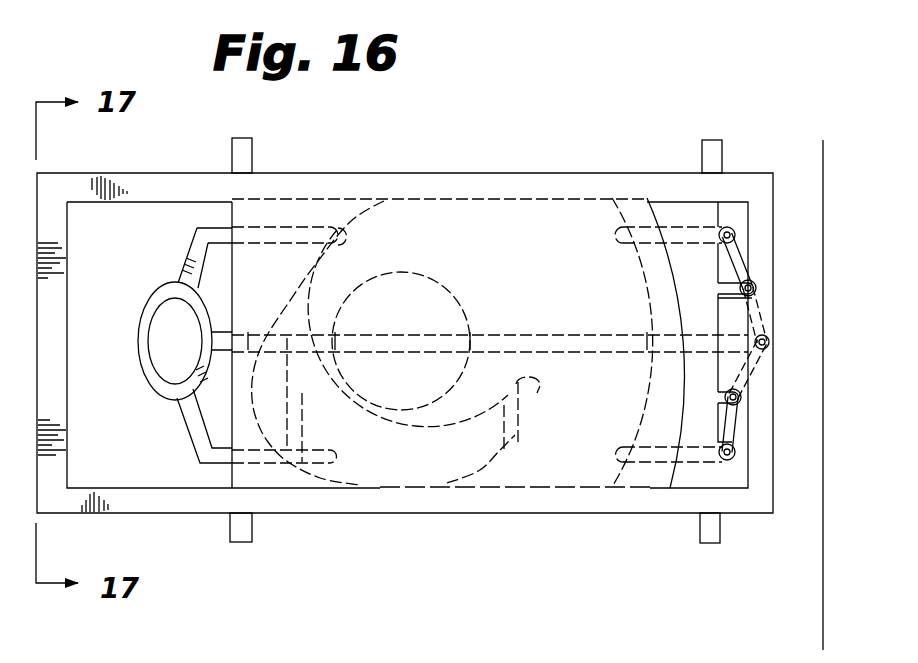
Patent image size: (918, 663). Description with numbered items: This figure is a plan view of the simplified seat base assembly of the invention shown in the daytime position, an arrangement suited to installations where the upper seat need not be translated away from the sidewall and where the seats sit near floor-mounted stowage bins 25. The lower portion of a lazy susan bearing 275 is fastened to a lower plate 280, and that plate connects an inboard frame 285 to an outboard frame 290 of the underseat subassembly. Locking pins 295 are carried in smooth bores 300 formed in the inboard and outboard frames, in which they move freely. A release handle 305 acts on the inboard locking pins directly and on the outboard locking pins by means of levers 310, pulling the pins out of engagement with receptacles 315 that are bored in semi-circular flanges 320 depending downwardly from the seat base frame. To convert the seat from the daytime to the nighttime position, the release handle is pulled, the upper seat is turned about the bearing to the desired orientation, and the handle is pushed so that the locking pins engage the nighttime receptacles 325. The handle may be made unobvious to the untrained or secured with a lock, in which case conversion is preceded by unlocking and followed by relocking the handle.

The floor-mounted stowage bins 25 is at (833, 570).
The lazy susan bearing 275 is at (420, 270).
The lower plate 280 is at (527, 197).
The inboard frame 285 is at (257, 478).
The outboard frame 290 is at (728, 152).
The locking pins 295 is at (218, 220).
The smooth bores 300 is at (268, 226).
The release handle 305 is at (146, 390).
The levers 310 is at (753, 262).
The receptacles 315 is at (318, 218).
The semi-circular flanges 320 is at (406, 492).
The nighttime receptacles 325 is at (307, 384).